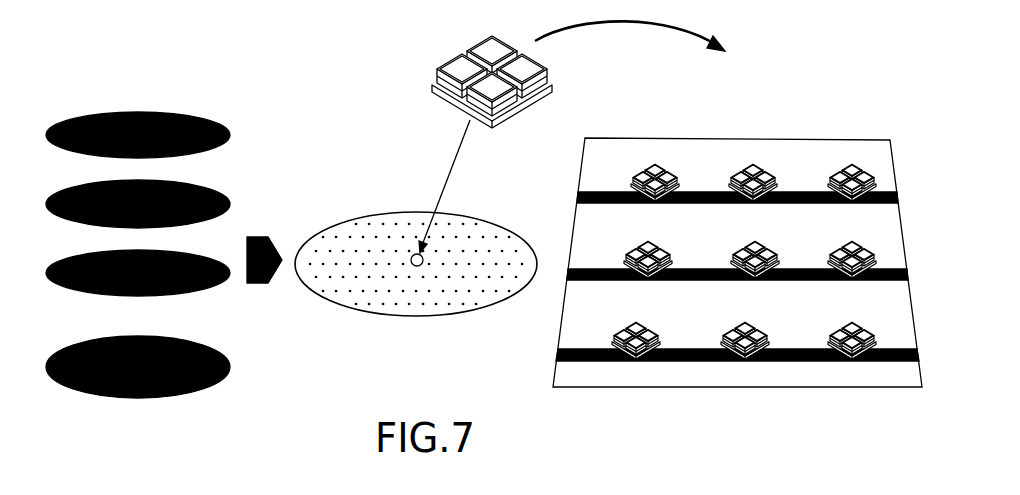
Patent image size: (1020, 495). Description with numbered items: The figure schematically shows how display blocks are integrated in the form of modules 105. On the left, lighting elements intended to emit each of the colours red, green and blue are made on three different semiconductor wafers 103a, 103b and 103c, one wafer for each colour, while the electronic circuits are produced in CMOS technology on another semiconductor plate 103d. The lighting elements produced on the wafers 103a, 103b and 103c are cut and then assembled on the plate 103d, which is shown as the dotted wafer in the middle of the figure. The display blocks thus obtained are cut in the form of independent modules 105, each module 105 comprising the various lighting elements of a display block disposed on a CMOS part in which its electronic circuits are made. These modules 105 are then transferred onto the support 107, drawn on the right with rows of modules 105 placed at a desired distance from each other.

The semiconductor wafer 103a is at (163, 122).
The semiconductor wafer 103b is at (208, 192).
The semiconductor wafer 103c is at (82, 277).
The semiconductor plate 103d is at (100, 393).
The module 105 is at (446, 43).
The support 107 is at (862, 150).